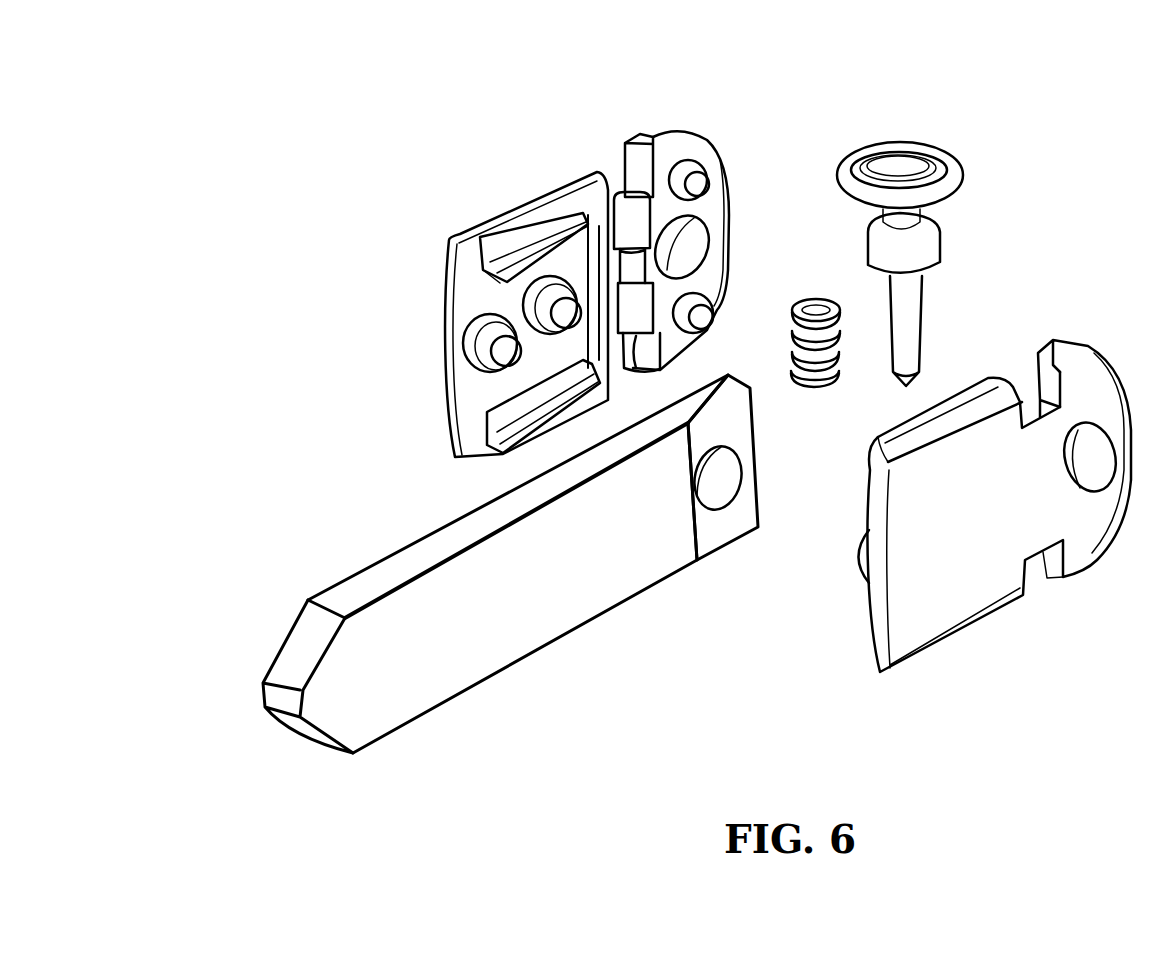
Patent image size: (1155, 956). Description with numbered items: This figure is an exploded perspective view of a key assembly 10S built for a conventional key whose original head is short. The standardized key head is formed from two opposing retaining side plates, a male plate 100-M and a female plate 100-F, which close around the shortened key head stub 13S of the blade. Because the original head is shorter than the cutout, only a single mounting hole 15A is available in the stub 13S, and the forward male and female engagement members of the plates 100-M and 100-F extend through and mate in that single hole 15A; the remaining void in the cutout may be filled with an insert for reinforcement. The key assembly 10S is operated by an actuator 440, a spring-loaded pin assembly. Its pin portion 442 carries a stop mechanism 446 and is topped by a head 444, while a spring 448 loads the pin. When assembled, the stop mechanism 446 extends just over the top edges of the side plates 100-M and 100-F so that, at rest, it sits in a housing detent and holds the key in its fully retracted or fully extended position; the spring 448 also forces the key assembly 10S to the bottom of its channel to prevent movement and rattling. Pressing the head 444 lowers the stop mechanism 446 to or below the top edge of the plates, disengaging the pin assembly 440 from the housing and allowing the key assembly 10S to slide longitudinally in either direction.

The male retaining side plate 100-M is at (530, 178).
The female retaining side plate 100-F is at (1010, 631).
The key assembly for a short-head key 10S is at (540, 564).
The key head stub of the short-head key 13S is at (715, 533).
The mounting hole 15A is at (712, 487).
The actuator (pin assembly) 440 is at (934, 204).
The actuator head 444 is at (913, 167).
The stop mechanism 446 is at (928, 250).
The pin portion 442 is at (911, 302).
The spring 448 is at (802, 300).